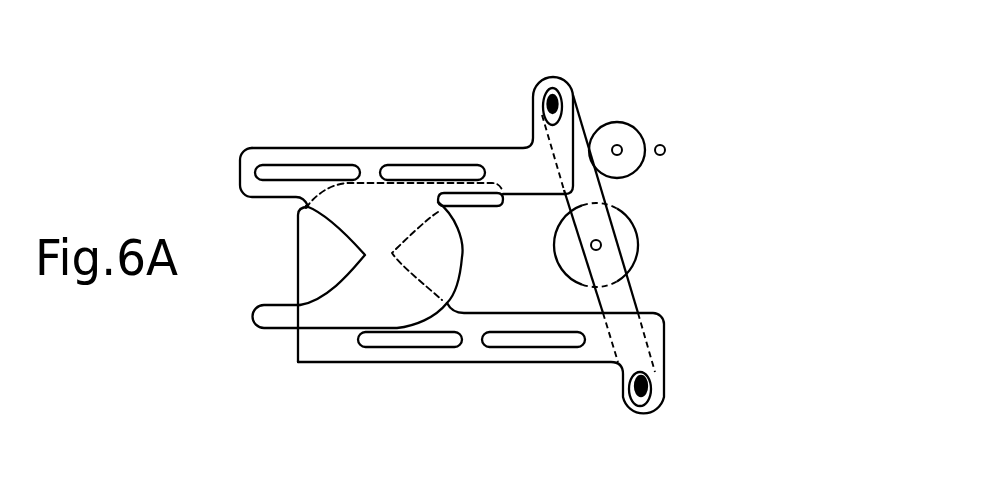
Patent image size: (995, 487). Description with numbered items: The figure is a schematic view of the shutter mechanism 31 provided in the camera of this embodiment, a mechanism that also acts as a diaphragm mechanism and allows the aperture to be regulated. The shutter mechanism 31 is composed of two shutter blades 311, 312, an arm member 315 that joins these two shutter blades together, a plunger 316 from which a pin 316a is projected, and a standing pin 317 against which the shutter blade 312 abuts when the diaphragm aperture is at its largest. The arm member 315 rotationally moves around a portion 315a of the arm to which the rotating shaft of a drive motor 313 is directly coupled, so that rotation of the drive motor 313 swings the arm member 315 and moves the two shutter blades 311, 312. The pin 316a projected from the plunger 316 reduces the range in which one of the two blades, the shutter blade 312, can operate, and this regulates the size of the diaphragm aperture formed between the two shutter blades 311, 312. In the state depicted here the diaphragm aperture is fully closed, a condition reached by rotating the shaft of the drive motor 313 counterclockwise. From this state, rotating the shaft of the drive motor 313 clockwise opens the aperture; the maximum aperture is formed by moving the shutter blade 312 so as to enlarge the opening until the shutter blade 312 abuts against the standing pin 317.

The shutter mechanism 31 is at (489, 90).
The shutter blade 311 is at (483, 350).
The shutter blade 312 is at (432, 162).
The drive motor 313 is at (573, 248).
The arm member 315 is at (617, 300).
The portion of the arm member 315a is at (602, 244).
The plunger 316 is at (652, 122).
The pin 316a is at (616, 146).
The standing pin 317 is at (666, 148).